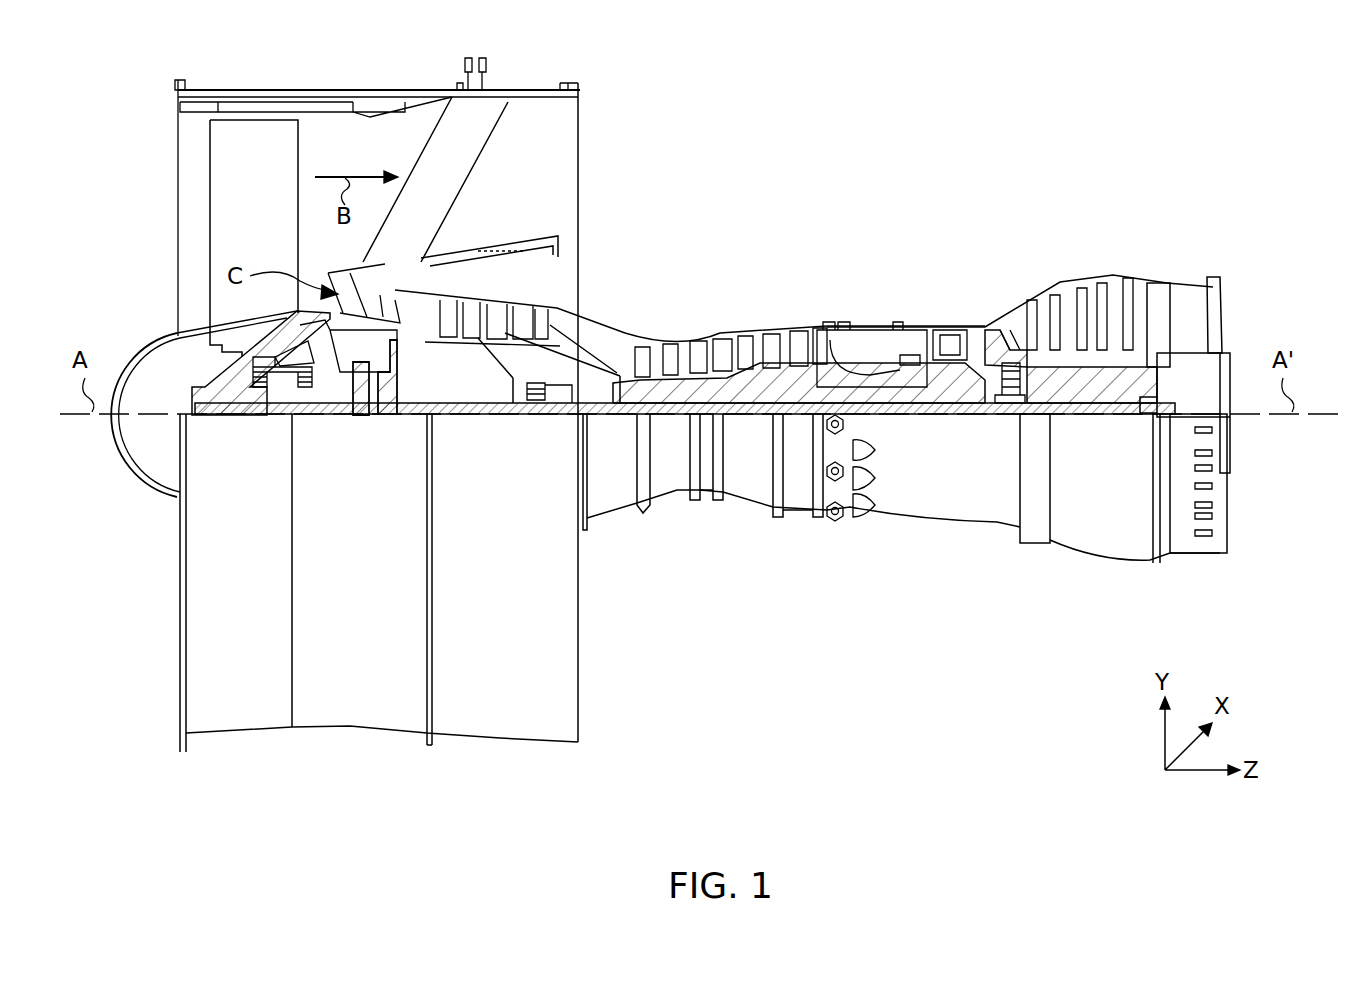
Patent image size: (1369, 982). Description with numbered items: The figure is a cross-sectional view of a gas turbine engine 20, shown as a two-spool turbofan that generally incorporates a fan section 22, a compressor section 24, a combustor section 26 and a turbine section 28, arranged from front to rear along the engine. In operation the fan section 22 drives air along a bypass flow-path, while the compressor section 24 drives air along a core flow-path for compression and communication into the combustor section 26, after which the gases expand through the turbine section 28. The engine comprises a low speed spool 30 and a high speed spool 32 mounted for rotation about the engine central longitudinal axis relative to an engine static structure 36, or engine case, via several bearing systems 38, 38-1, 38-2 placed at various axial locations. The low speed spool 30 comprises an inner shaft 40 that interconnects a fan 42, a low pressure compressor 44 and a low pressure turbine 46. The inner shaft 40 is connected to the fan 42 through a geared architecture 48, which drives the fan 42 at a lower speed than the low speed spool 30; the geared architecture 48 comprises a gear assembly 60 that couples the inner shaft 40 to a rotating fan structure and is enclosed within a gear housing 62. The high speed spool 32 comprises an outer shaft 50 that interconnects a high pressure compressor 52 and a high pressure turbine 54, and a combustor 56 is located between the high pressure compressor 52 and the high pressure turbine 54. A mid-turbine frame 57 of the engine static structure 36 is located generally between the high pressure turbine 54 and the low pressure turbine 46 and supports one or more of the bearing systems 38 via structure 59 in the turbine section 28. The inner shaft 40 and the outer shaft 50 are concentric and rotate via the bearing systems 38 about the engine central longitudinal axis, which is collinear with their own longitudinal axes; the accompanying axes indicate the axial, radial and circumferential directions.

The gas turbine engine 20 is at (929, 130).
The fan section 22 is at (425, 66).
The compressor section 24 is at (430, 206).
The combustor section 26 is at (930, 206).
The turbine section 28 is at (1158, 206).
The low speed spool 30 is at (757, 420).
The high speed spool 32 is at (795, 383).
The engine static structure 36 is at (354, 711).
The bearing system 38 is at (1005, 400).
The bearing system 38-1 is at (265, 390).
The bearing system 38-2 is at (530, 400).
The inner shaft 40 is at (600, 420).
The fan 42 is at (264, 227).
The low pressure compressor 44 is at (507, 308).
The low pressure turbine 46 is at (1082, 307).
The geared architecture 48 is at (392, 422).
The outer shaft 50 is at (875, 397).
The high pressure compressor 52 is at (737, 387).
The high pressure turbine 54 is at (953, 332).
The combustor 56 is at (870, 352).
The mid-turbine frame 57 is at (993, 323).
The structure 59 is at (1008, 320).
The gear assembly 60 is at (393, 397).
The gear housing 62 is at (393, 364).